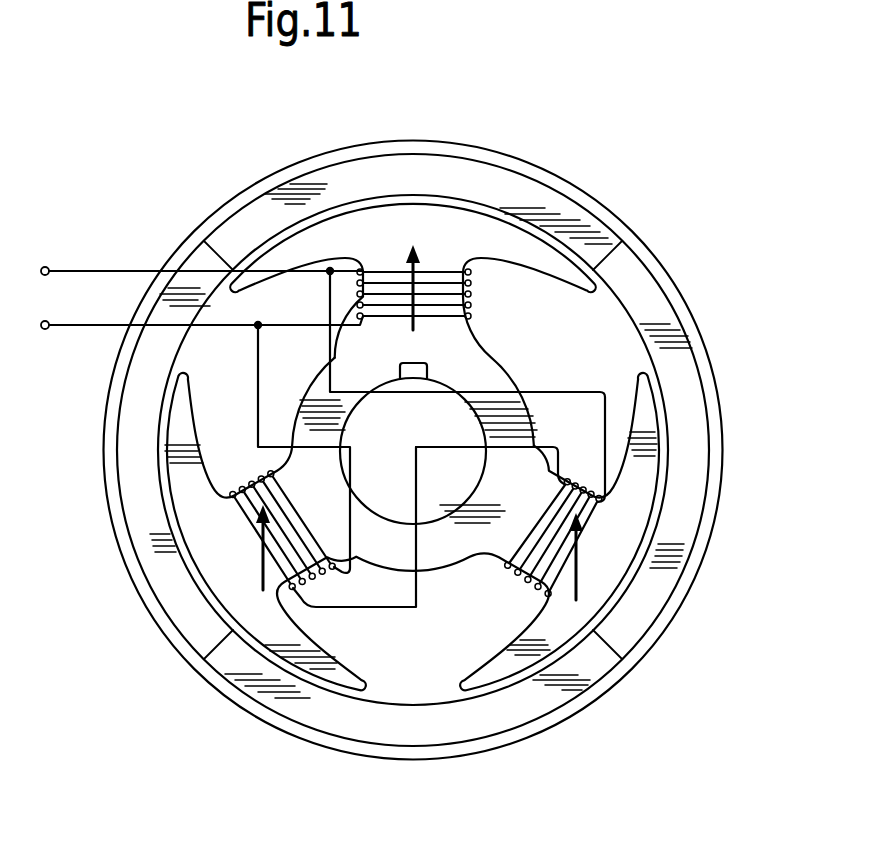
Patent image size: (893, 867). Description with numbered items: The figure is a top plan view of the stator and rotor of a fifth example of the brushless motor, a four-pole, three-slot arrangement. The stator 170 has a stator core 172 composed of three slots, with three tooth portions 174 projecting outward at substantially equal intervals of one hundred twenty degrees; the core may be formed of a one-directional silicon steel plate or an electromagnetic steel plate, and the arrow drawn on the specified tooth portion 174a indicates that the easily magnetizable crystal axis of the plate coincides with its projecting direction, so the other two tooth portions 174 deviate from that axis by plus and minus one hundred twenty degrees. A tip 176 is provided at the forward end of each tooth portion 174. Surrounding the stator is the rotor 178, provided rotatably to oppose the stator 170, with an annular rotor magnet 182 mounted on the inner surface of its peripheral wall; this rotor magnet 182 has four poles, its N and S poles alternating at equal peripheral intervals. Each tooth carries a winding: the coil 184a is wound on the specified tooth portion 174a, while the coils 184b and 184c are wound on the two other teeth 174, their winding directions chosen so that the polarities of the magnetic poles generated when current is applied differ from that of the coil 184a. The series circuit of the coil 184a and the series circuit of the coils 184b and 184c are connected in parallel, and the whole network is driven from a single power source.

The stator 170 is at (668, 405).
The stator core 172 is at (512, 374).
The tooth portions 174 is at (594, 531).
The specified tooth portion 174a is at (438, 264).
The tip 176 is at (557, 264).
The rotor 178 is at (124, 570).
The annular rotor magnet 182 is at (304, 716).
The coil 184a is at (380, 271).
The coil 184b is at (550, 606).
The coil 184c is at (293, 591).